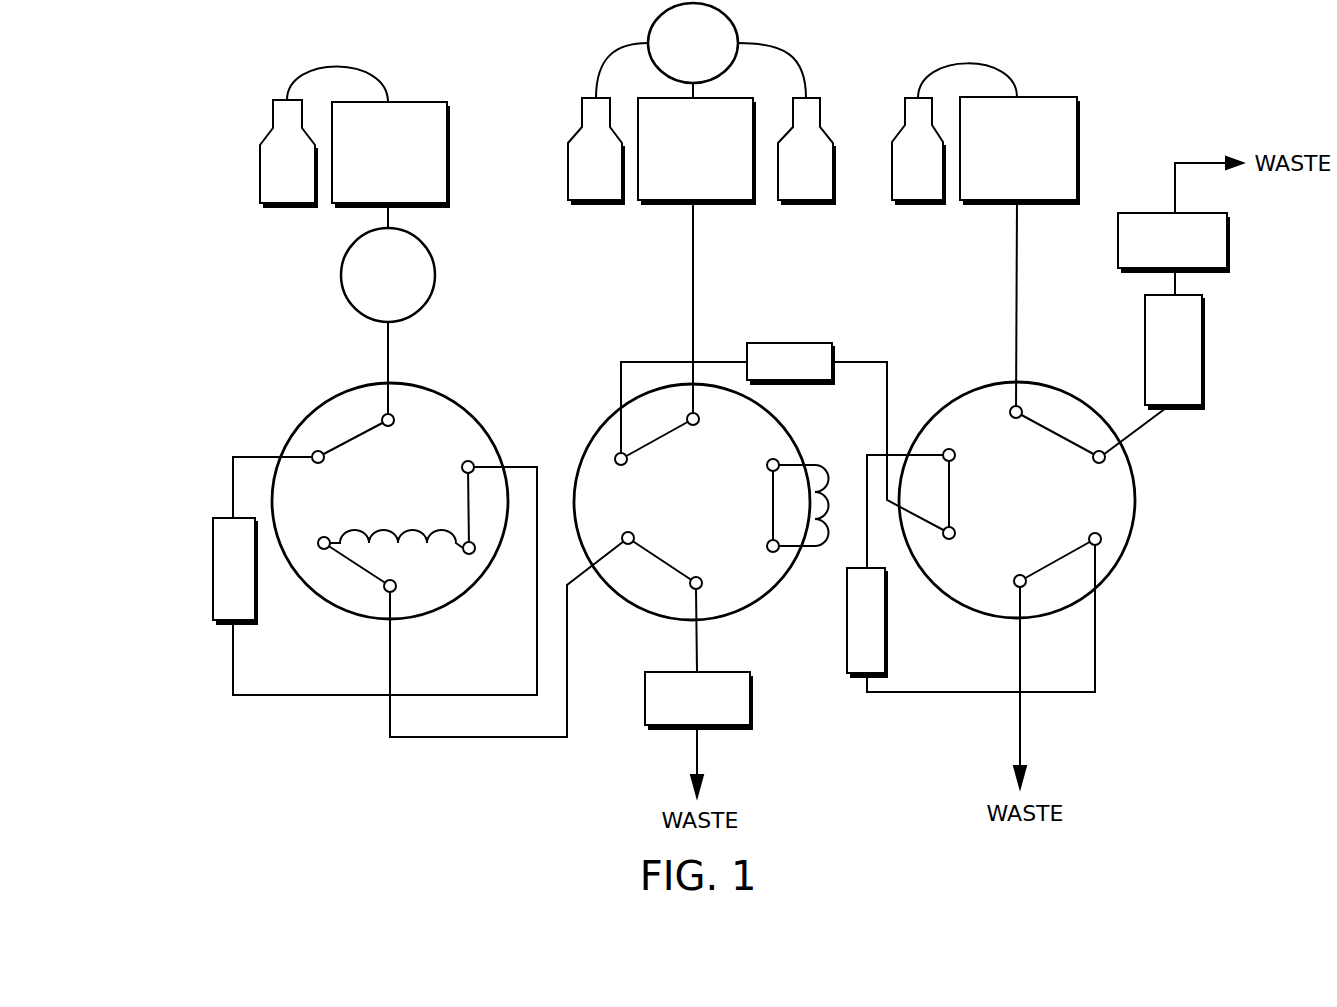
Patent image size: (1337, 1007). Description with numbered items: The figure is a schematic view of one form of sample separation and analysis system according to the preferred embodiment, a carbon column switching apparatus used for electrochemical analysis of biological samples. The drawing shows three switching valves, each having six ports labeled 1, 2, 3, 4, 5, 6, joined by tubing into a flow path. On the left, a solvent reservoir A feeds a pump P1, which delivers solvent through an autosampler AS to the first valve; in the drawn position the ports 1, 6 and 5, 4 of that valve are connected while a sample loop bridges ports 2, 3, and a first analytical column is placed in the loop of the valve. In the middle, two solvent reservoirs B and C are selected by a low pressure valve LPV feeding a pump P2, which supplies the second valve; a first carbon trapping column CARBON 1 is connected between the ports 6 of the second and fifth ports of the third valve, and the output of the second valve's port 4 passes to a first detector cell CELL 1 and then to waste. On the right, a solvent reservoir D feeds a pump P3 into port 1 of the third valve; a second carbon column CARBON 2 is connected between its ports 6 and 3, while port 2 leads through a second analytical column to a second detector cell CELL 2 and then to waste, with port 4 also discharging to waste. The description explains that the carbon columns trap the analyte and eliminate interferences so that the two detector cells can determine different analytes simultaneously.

The valve port 1 is at (701, 434).
The valve port 2 is at (772, 469).
The valve port 3 is at (782, 530).
The valve port 4 is at (705, 569).
The valve port 5 is at (644, 526).
The valve port 6 is at (642, 464).
The solvent reservoir A is at (288, 153).
The solvent reservoir B is at (595, 150).
The solvent reservoir C is at (806, 150).
The solvent reservoir D is at (918, 150).
The pump P1 is at (367, 136).
The pump P2 is at (696, 258).
The pump P3 is at (998, 237).
The autosampler AS is at (388, 311).
The low pressure valve LPV is at (701, 50).
The detector cell 1 CELL 1 is at (698, 693).
The detector cell 2 CELL 2 is at (1180, 226).
The carbon column 1 CARBON 1 is at (754, 343).
The carbon column 2 CARBON 2 is at (852, 675).